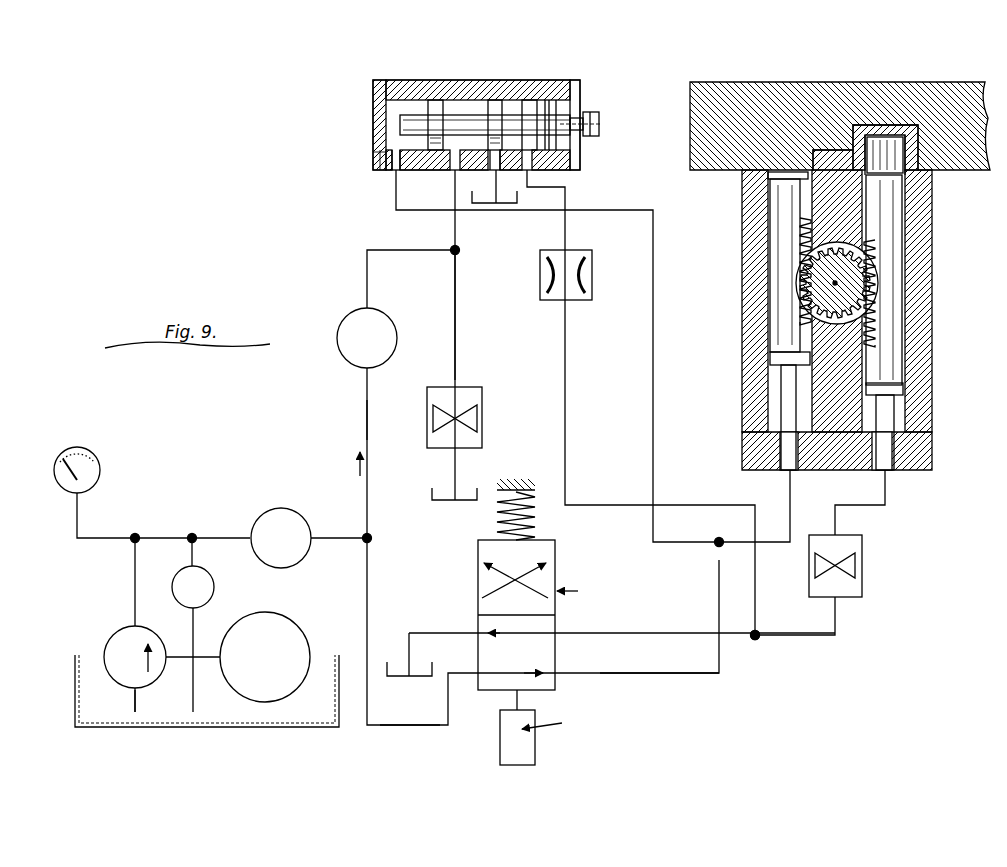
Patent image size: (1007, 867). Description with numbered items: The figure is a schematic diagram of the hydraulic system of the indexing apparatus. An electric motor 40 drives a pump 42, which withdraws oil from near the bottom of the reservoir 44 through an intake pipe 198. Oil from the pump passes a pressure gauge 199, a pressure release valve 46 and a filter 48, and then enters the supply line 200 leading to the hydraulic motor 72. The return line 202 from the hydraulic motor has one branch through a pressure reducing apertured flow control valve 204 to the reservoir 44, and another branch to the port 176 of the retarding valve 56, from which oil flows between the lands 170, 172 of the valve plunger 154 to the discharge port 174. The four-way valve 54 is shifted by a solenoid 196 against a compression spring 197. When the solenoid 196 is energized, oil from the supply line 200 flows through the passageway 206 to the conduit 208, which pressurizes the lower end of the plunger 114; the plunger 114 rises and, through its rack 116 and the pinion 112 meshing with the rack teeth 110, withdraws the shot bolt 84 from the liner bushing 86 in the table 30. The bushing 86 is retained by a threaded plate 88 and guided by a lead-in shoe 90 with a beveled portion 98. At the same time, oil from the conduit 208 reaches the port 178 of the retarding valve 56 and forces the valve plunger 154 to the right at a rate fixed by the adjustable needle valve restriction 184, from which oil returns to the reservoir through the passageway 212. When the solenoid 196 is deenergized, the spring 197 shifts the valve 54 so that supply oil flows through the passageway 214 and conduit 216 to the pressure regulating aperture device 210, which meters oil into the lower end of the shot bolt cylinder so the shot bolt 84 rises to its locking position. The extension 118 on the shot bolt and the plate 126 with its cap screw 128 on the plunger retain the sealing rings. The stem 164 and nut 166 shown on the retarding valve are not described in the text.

The table 30 is at (861, 70).
The electric motor 40 is at (286, 620).
The pump 42 is at (116, 632).
The reservoir 44 is at (517, 202).
The pressure release valve 46 is at (214, 588).
The filter 48 is at (285, 508).
The four-way valve 54 is at (546, 623).
The retarding valve 56 is at (482, 125).
The hydraulic motor 72 is at (337, 340).
The shot bolt 84 is at (891, 240).
The liner bushing 86 is at (918, 142).
The plate 88 is at (878, 128).
The lead-in shoe 90 is at (819, 150).
The beveled portion 98 is at (866, 174).
The rack teeth 110 is at (868, 283).
The pinion 112 is at (842, 294).
The plunger 114 is at (753, 262).
The rack 116 is at (803, 284).
The extension 118 is at (890, 408).
The plate 126 is at (769, 358).
The cap screw 128 is at (790, 369).
The valve plunger 154 is at (458, 117).
The spool stem 164 is at (592, 117).
The adjusting nut 166 is at (591, 134).
The land 170 is at (436, 99).
The land 172 is at (504, 110).
The discharge port 174 is at (497, 165).
The port 176 is at (441, 167).
The port 178 is at (381, 158).
The adjustable needle valve restriction 184 is at (593, 271).
The solenoid 196 is at (536, 742).
The compression spring 197 is at (533, 482).
The intake pipe 198 is at (134, 714).
The pressure gauge 199 is at (100, 482).
The supply line 200 is at (366, 422).
The return line 202 is at (457, 306).
The pressure reducing apertured flow control valve 204 is at (470, 400).
The passageway 206 is at (512, 673).
The conduit 208 is at (719, 665).
The pressure regulating aperture device 210 is at (862, 584).
The passageway 212 is at (538, 633).
The passageway 214 is at (549, 562).
The conduit 216 is at (800, 622).